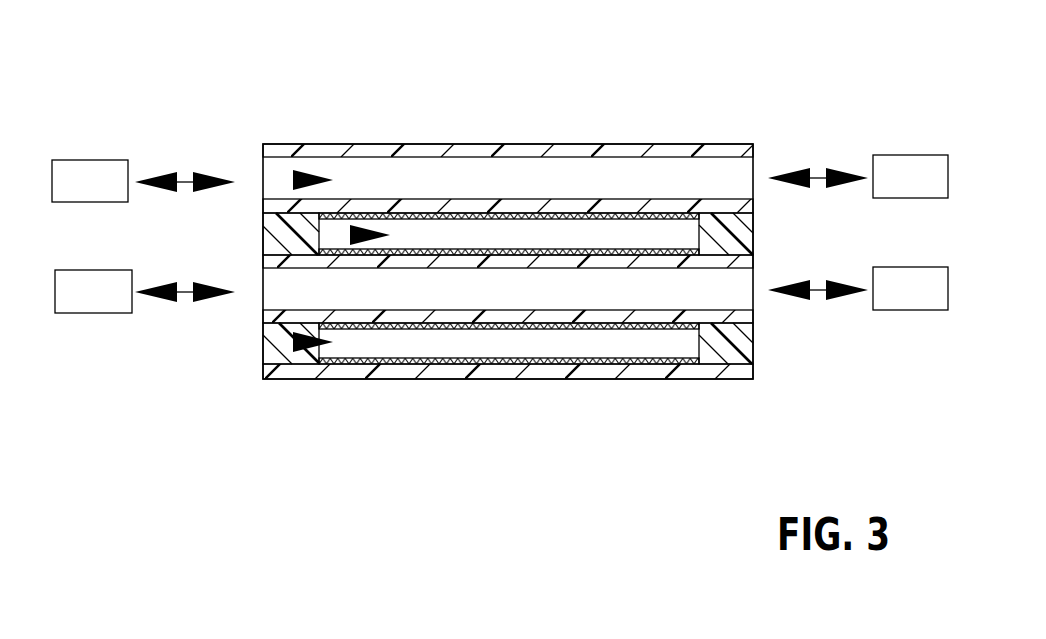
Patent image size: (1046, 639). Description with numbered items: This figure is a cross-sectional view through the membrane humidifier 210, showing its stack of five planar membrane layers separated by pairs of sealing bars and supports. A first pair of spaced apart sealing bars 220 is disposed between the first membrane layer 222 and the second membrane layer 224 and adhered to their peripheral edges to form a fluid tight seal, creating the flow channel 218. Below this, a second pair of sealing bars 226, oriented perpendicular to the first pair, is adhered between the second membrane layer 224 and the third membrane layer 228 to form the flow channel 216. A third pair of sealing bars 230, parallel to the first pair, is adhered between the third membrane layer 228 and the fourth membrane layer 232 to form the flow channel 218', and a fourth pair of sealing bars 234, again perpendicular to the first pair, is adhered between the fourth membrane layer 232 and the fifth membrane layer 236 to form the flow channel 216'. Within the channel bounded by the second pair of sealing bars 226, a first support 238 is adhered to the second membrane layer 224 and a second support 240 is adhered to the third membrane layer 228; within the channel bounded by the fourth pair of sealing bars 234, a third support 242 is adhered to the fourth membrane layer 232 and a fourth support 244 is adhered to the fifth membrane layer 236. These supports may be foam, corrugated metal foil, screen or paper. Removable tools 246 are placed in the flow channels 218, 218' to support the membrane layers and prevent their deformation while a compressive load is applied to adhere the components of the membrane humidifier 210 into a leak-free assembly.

The membrane humidifier 210 is at (170, 95).
The flow channel 216 is at (274, 223).
The flow channel 216' is at (220, 354).
The flow channel 218 is at (288, 109).
The flow channel 218' is at (243, 317).
The first pair of spaced apart sealing bars 220 is at (525, 190).
The first substantially planar membrane layer 222 is at (718, 150).
The second substantially planar membrane layer 224 is at (738, 203).
The second pair of spaced apart sealing bars 226 is at (274, 249).
The third substantially planar membrane layer 228 is at (745, 257).
The third pair of spaced apart sealing bars 230 is at (525, 298).
The fourth substantially planar membrane layer 232 is at (740, 316).
The fourth pair of spaced apart sealing bars 234 is at (278, 360).
The fifth substantially planar membrane layer 236 is at (690, 372).
The first support 238 is at (547, 218).
The second support 240 is at (613, 247).
The third support 242 is at (352, 330).
The fourth support 244 is at (477, 360).
The removable tools 246 is at (500, 234).